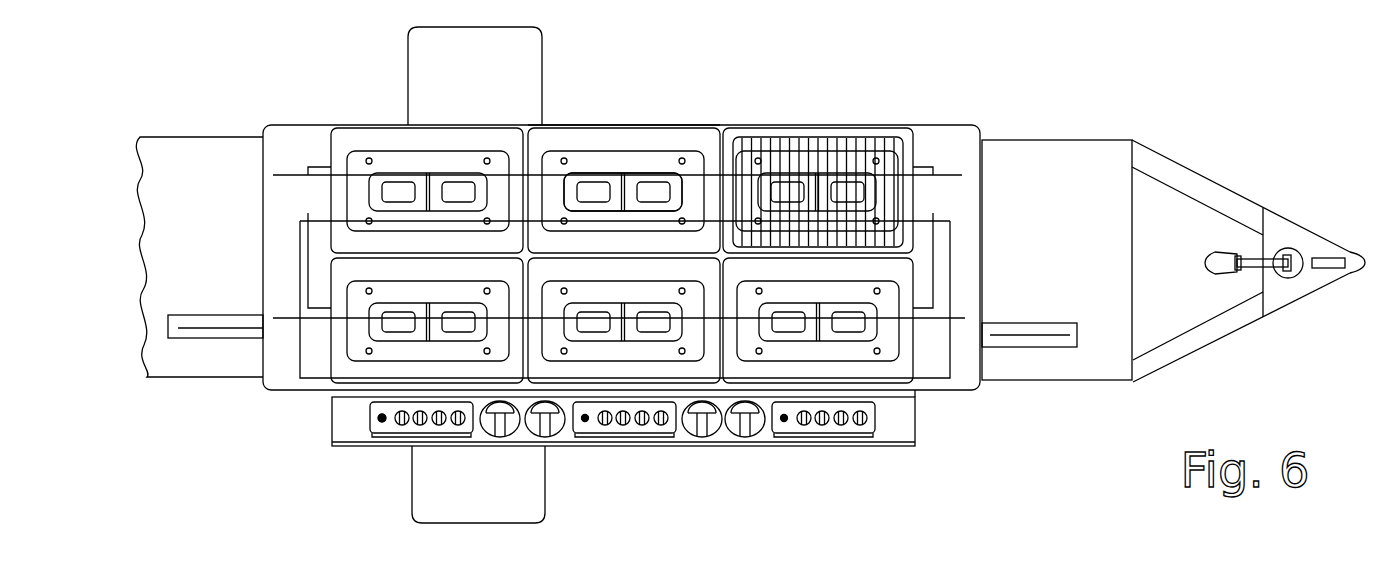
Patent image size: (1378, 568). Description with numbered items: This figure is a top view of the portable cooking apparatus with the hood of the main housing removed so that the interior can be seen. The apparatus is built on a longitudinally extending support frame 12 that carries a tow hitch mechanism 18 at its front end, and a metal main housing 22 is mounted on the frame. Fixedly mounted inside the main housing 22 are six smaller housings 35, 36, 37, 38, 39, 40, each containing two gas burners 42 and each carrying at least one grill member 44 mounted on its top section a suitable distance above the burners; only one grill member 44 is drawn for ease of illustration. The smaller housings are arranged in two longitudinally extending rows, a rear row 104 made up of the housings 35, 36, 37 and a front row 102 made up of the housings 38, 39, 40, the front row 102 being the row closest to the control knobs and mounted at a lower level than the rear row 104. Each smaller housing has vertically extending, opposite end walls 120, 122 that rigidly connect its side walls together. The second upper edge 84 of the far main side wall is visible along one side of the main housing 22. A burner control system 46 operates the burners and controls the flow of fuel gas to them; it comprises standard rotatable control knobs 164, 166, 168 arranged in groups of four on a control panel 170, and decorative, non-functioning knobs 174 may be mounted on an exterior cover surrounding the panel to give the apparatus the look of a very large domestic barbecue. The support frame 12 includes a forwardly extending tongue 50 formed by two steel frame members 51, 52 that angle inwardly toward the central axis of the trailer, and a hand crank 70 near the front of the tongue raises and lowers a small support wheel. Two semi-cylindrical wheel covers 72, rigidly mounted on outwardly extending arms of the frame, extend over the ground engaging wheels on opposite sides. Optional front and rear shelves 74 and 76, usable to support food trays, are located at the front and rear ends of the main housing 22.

The support frame 12 is at (1028, 140).
The tow hitch mechanism 18 is at (1335, 258).
The main housing 22 is at (925, 127).
The smaller housing 35 is at (370, 133).
The smaller housing 36 is at (565, 140).
The smaller housing 37 is at (820, 127).
The smaller housing 38 is at (337, 355).
The smaller housing 39 is at (550, 368).
The smaller housing 40 is at (893, 373).
The gas burner 42 is at (673, 192).
The grill member 44 is at (782, 140).
The burner control system 46 is at (875, 428).
The tongue 50 is at (1200, 178).
The frame member 51 is at (1182, 180).
The frame member 52 is at (1177, 347).
The hand crank 70 is at (1257, 262).
The wheel cover 72 is at (462, 94).
The front shelf 74 is at (1046, 262).
The rear shelf 76 is at (183, 254).
The second upper edge 84 is at (612, 125).
The front row 102 is at (348, 365).
The rear row 104 is at (342, 142).
The end wall 120 is at (619, 272).
The end wall 122 is at (937, 237).
The control knob 164 is at (397, 415).
The control knob 166 is at (623, 430).
The control knob 168 is at (825, 425).
The control panel 170 is at (368, 415).
The decorative knob 174 is at (692, 428).